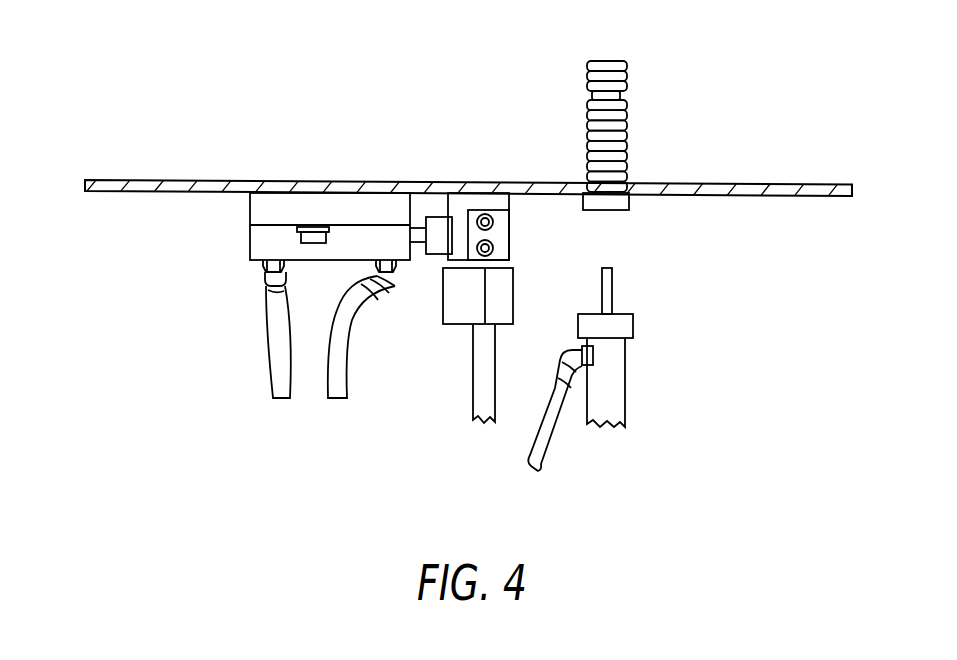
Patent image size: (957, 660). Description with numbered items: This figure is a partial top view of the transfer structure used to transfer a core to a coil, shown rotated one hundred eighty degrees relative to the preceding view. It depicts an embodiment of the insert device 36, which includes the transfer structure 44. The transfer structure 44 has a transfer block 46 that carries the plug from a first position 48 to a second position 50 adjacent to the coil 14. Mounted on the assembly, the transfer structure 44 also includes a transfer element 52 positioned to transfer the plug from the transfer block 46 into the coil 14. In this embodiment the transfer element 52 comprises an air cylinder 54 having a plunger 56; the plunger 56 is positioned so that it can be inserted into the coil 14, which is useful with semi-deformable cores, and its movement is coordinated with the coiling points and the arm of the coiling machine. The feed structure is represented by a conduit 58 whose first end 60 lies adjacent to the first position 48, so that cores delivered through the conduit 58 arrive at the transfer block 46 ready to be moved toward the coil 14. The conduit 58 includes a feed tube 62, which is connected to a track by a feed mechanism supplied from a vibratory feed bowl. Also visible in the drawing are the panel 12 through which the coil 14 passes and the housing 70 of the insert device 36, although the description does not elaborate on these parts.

The ceiling panel 12 is at (727, 184).
The coil 14 is at (627, 122).
The insert device 36 is at (377, 333).
The transfer structure 44 is at (384, 405).
The transfer block 46 is at (511, 221).
The first position 48 is at (485, 181).
The second position 50 is at (635, 231).
The transfer element 52 is at (641, 369).
The air cylinder 54 is at (626, 404).
The plunger 56 is at (620, 285).
The conduit 58 is at (482, 360).
The first end 60 is at (503, 293).
The feed tube 62 is at (482, 380).
The valve housing 70 is at (250, 229).